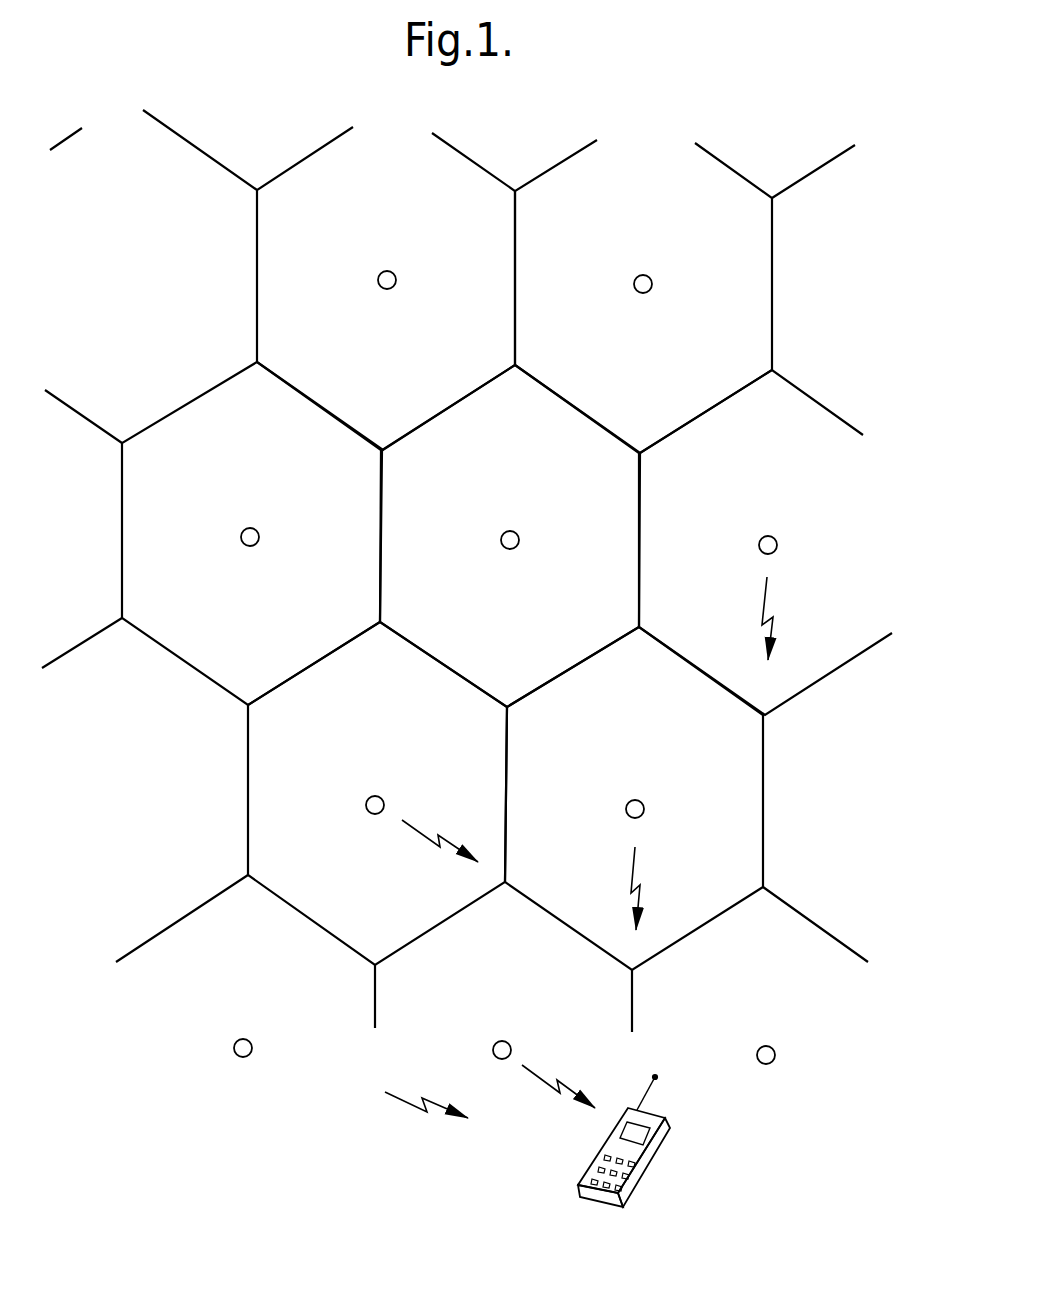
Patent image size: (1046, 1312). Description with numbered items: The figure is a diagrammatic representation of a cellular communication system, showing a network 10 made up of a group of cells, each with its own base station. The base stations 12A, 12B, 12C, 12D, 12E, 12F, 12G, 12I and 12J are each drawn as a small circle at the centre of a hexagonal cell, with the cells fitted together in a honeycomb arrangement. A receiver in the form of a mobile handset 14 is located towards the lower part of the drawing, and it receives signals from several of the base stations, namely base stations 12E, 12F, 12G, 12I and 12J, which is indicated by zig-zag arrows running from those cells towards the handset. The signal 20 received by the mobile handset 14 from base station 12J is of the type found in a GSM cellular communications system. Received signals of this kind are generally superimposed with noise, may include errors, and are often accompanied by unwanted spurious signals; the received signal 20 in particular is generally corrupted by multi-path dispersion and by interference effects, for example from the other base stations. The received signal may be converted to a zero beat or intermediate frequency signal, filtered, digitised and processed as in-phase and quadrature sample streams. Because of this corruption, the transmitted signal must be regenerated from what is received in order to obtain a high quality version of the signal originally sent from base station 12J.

The network 10 is at (675, 86).
The base station 12A is at (387, 271).
The base station 12B is at (643, 275).
The base station 12C is at (251, 528).
The base station 12D is at (511, 531).
The base station 12E is at (768, 536).
The base station 12F is at (376, 796).
The base station 12G is at (635, 800).
The base station 12I is at (244, 1039).
The base station 12J is at (503, 1041).
The mobile handset 14 is at (650, 1168).
The signal 20 is at (558, 1076).